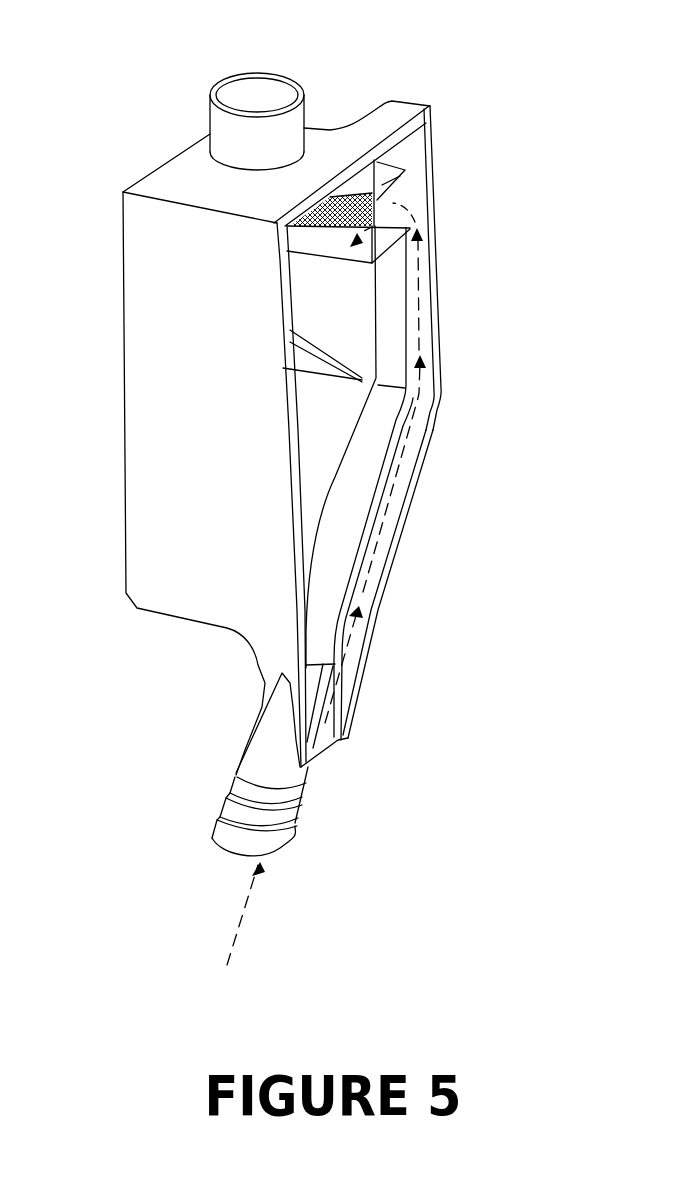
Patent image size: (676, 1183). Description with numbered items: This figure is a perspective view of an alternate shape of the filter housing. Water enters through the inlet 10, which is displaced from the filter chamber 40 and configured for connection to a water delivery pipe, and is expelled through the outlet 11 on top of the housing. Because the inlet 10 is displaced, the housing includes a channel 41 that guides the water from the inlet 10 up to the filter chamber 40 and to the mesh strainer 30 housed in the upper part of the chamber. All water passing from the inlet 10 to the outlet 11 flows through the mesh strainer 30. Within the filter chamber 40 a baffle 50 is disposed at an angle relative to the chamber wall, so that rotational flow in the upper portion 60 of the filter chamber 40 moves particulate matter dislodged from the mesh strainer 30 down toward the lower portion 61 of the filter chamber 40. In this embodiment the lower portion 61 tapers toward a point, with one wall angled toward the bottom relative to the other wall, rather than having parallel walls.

The inlet 10 is at (232, 855).
The outlet 11 is at (272, 95).
The mesh strainer 30 is at (430, 203).
The filter chamber 40 is at (362, 400).
The channel 41 is at (368, 585).
The baffle 50 is at (283, 373).
The upper portion of the filter chamber 60 is at (348, 313).
The lower portion of the filter chamber 61 is at (325, 477).